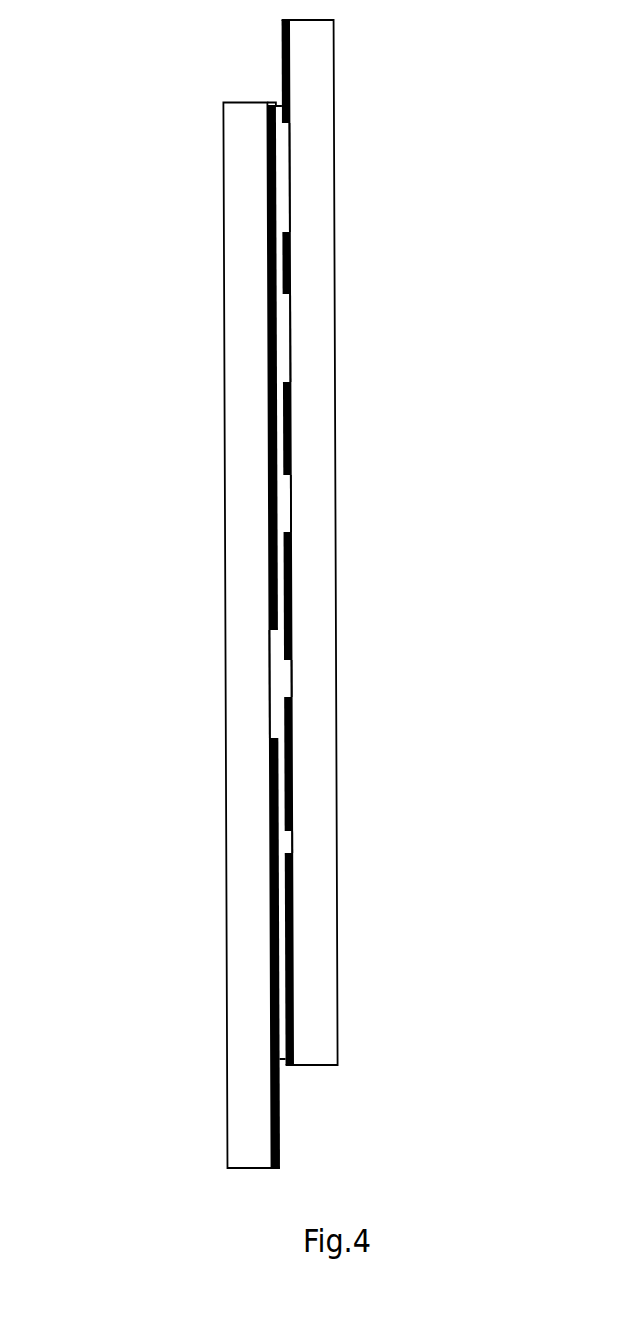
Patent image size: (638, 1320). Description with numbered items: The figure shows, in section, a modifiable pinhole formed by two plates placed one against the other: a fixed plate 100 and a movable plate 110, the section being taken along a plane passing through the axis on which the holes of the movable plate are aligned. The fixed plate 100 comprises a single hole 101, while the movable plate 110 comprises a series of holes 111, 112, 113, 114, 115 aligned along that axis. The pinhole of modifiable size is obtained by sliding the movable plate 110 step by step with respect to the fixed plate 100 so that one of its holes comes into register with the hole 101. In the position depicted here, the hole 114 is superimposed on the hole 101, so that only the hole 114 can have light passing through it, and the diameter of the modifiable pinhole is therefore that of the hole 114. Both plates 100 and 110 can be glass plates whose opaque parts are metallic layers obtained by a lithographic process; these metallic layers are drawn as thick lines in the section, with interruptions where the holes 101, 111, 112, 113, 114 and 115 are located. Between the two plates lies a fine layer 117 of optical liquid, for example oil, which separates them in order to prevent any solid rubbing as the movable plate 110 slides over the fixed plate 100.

The fixed plate 100 is at (225, 585).
The hole 101 is at (267, 673).
The movable plate 110 is at (340, 573).
The hole 111 is at (294, 175).
The hole 112 is at (295, 329).
The hole 113 is at (294, 503).
The hole 114 is at (294, 678).
The hole 115 is at (295, 845).
The fine layer of optical liquid 117 is at (285, 139).